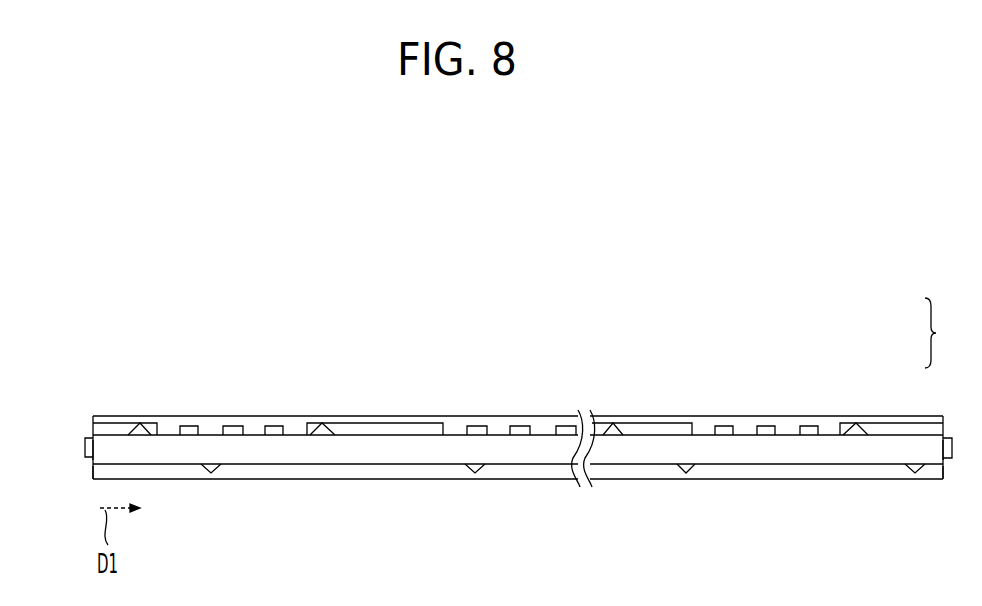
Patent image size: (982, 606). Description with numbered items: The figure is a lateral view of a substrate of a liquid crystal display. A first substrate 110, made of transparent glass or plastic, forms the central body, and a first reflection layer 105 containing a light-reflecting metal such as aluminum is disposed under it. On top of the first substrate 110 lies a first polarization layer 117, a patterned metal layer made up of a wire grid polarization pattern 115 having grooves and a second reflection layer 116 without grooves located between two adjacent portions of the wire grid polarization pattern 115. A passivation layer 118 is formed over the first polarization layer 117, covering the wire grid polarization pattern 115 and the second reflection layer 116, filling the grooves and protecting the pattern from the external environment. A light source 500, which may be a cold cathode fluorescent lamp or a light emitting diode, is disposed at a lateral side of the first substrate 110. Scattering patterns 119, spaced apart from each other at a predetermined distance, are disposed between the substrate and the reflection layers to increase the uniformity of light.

The light source 500 is at (84, 445).
The first reflection layer 105 is at (277, 473).
The first substrate 110 is at (331, 448).
The wire grid polarization pattern 115 is at (518, 426).
The second reflection layer 116 is at (376, 424).
The first polarization layer 117 is at (945, 333).
The passivation layer 118 is at (745, 426).
The scattering patterns 119 is at (689, 471).